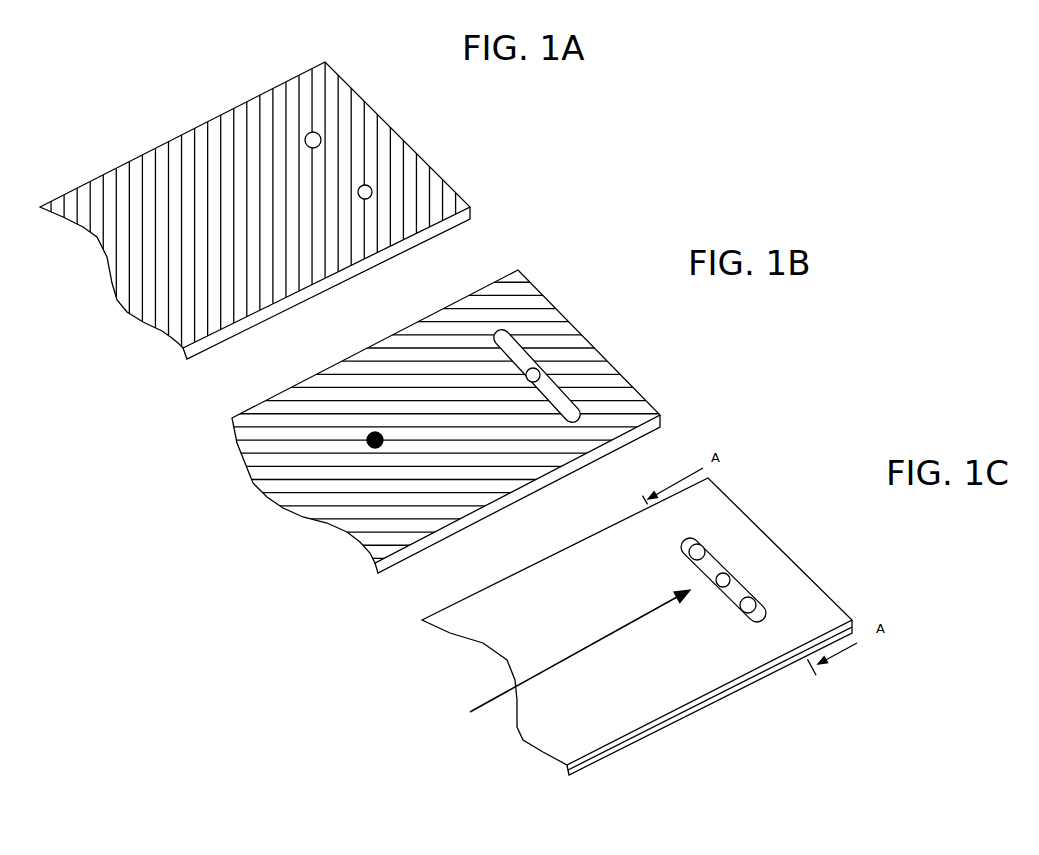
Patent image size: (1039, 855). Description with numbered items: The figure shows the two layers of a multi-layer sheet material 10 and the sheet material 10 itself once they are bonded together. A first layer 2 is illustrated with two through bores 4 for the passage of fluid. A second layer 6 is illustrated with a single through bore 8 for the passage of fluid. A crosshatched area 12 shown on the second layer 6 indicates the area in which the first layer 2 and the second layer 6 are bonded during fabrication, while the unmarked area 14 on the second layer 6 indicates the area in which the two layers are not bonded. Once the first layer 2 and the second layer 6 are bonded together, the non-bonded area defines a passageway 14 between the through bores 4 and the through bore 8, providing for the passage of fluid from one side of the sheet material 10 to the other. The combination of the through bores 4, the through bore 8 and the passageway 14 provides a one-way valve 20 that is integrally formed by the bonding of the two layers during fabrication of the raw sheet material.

In FIG. 1A, the first layer 2 is at (150, 110).
In FIG. 1C, the first layer 2 is at (605, 758).
In FIG. 1A, the through bores 4 is at (319, 136).
In FIG. 1C, the through bores 4 is at (700, 548).
In FIG. 1B, the second layer 6 is at (222, 470).
In FIG. 1C, the second layer 6 is at (632, 677).
In FIG. 1B, the through bore 8 is at (538, 373).
In FIG. 1C, the through bore 8 is at (729, 577).
In FIG. 1C, the multi-layer sheet material 10 is at (567, 646).
In FIG. 1B, the crosshatched area 12 is at (368, 449).
In FIG. 1B, the passageway 14 is at (507, 347).
In FIG. 1C, the passageway 14 is at (733, 592).
In FIG. 1C, the one-way valve 20 is at (548, 665).